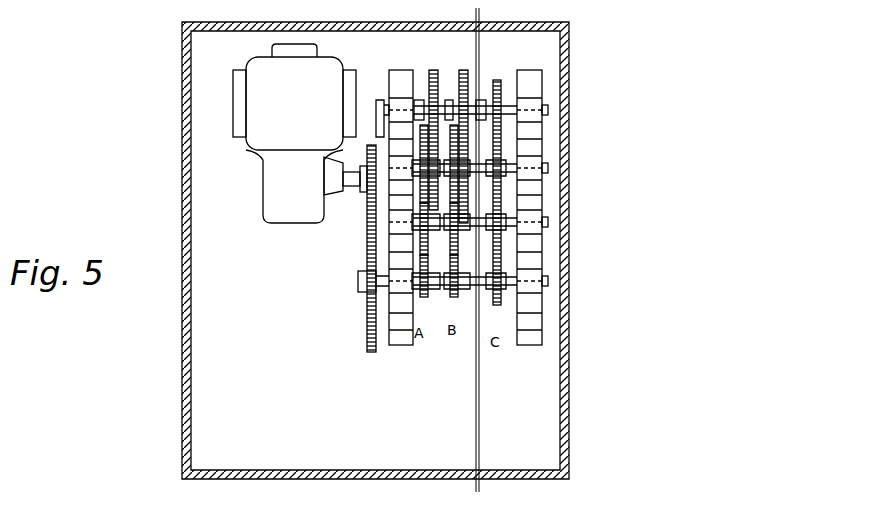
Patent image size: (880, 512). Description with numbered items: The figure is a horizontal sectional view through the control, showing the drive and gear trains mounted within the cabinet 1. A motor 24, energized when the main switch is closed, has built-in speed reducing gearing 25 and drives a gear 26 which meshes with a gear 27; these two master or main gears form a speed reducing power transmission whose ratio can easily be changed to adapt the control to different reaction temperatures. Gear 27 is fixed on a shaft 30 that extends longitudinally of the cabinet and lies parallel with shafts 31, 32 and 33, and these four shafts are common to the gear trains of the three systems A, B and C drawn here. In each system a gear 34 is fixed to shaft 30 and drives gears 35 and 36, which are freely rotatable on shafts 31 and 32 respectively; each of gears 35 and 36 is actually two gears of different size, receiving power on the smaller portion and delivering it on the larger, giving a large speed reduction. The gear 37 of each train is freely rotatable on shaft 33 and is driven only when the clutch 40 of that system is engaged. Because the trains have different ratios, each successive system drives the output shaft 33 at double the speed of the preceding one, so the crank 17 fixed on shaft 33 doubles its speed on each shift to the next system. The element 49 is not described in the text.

The cabinet 1 is at (182, 165).
The crank 17 is at (380, 100).
The motor 24 is at (263, 138).
The speed reducing gearing 25 is at (283, 208).
The gear 26 is at (367, 198).
The gear 27 is at (368, 332).
The shaft 30 is at (546, 287).
The shaft 31 is at (546, 228).
The shaft 32 is at (546, 174).
The shaft 33 is at (546, 118).
The gear 34 is at (423, 297).
The gear 35 is at (432, 247).
The gear 36 is at (436, 190).
The gear 37 is at (436, 70).
The clutch 40 is at (419, 100).
The drum 49 is at (398, 345).